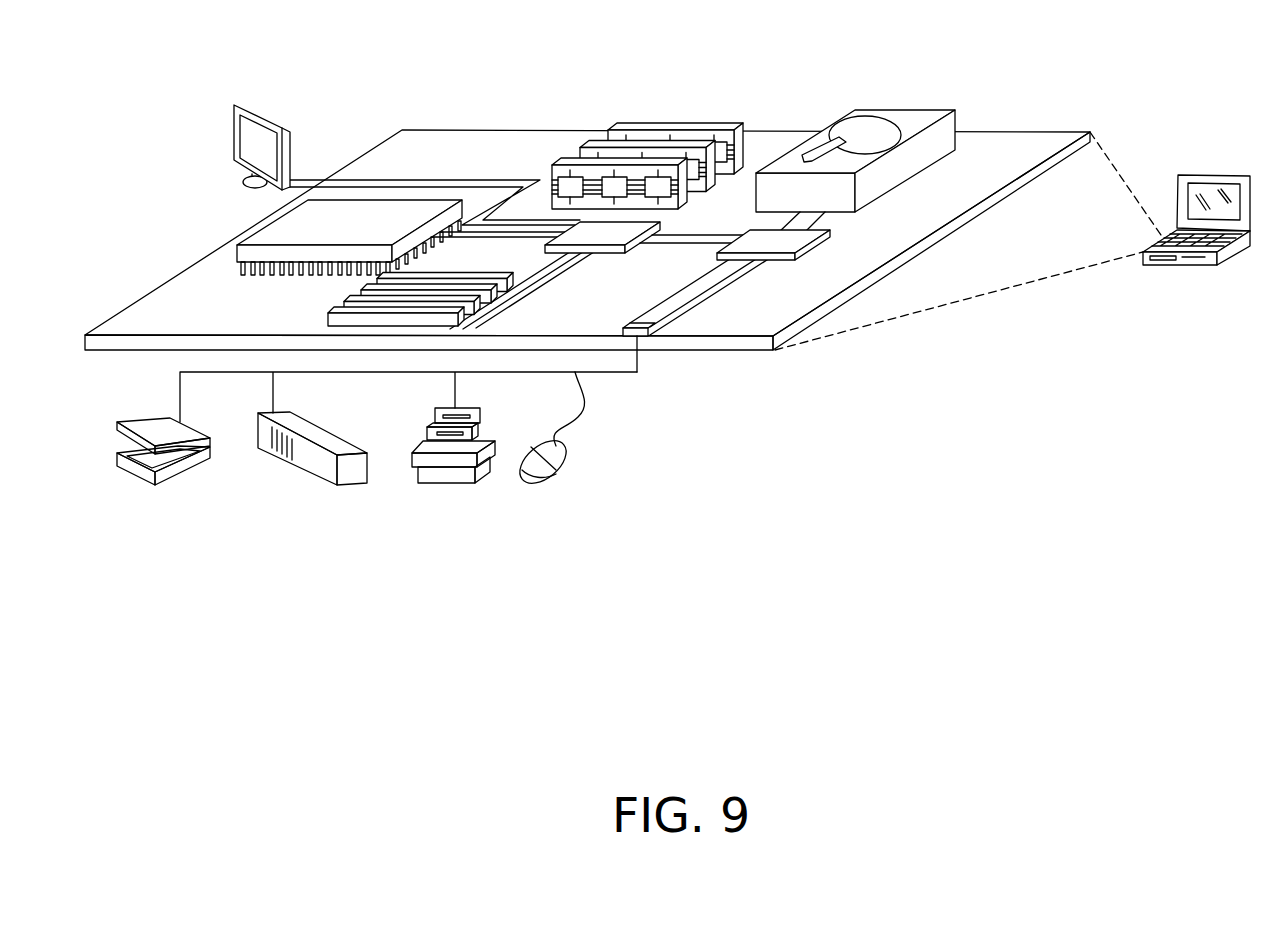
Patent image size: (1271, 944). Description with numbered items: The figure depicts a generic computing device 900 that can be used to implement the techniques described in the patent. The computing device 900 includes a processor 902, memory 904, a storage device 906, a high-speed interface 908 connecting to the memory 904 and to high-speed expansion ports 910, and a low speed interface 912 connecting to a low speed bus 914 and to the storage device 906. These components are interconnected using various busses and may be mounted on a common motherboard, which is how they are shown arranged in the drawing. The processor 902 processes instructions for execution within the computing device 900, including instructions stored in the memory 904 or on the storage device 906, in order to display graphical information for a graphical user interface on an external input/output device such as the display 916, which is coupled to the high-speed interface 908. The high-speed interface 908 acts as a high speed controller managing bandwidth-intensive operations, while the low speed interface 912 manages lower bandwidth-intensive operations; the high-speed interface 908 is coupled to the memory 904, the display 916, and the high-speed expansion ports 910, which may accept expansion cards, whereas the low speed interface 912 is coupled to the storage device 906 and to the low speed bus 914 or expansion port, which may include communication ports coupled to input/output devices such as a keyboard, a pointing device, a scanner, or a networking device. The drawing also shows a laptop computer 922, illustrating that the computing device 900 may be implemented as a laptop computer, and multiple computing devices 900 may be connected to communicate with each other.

The computing device 900 is at (352, 79).
The processor 902 is at (263, 229).
The memory 904 is at (677, 129).
The storage device 906 is at (893, 111).
The high-speed interface 908 is at (613, 232).
The high-speed expansion ports 910 is at (352, 298).
The low speed interface 912 is at (748, 237).
The low speed bus 914 is at (641, 326).
The display 916 is at (238, 104).
The remote computer 922 is at (1227, 173).